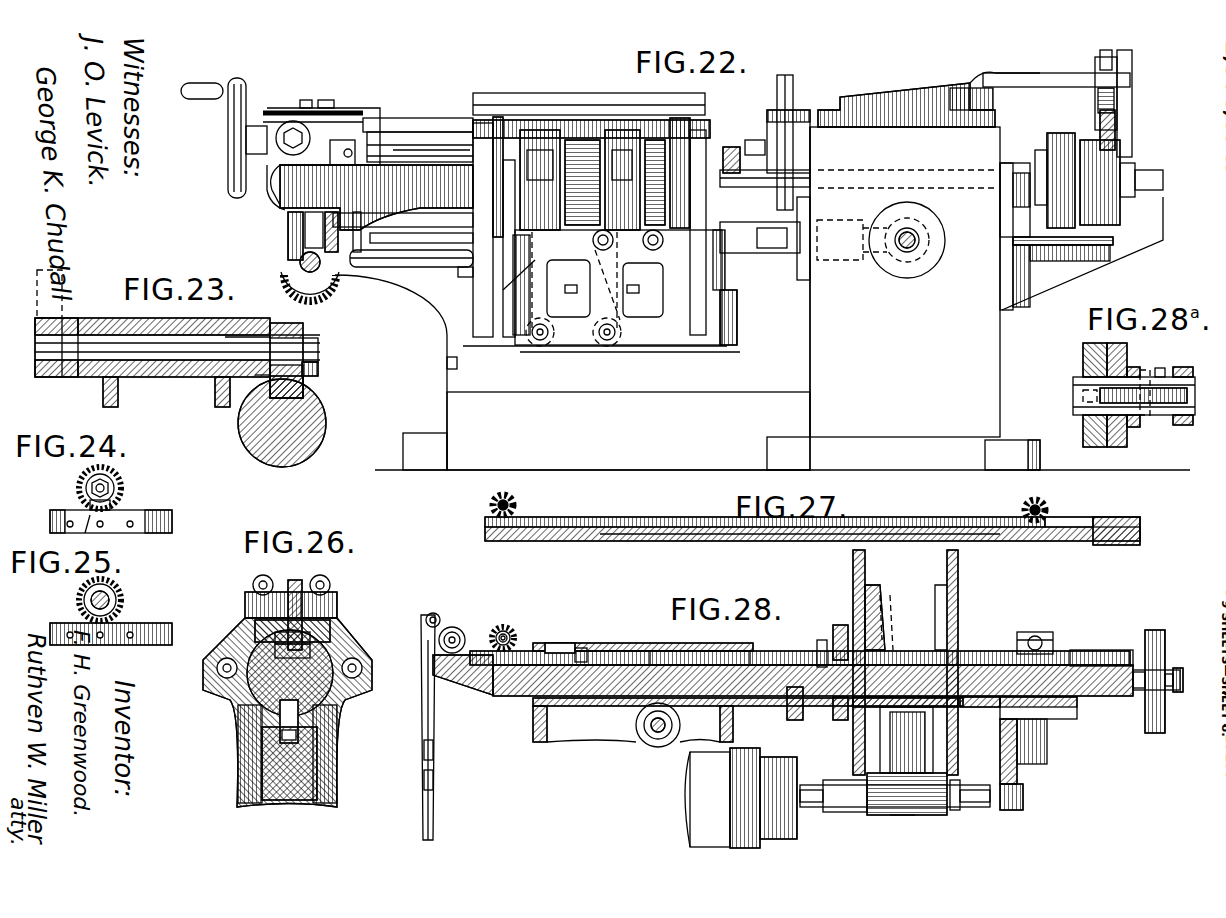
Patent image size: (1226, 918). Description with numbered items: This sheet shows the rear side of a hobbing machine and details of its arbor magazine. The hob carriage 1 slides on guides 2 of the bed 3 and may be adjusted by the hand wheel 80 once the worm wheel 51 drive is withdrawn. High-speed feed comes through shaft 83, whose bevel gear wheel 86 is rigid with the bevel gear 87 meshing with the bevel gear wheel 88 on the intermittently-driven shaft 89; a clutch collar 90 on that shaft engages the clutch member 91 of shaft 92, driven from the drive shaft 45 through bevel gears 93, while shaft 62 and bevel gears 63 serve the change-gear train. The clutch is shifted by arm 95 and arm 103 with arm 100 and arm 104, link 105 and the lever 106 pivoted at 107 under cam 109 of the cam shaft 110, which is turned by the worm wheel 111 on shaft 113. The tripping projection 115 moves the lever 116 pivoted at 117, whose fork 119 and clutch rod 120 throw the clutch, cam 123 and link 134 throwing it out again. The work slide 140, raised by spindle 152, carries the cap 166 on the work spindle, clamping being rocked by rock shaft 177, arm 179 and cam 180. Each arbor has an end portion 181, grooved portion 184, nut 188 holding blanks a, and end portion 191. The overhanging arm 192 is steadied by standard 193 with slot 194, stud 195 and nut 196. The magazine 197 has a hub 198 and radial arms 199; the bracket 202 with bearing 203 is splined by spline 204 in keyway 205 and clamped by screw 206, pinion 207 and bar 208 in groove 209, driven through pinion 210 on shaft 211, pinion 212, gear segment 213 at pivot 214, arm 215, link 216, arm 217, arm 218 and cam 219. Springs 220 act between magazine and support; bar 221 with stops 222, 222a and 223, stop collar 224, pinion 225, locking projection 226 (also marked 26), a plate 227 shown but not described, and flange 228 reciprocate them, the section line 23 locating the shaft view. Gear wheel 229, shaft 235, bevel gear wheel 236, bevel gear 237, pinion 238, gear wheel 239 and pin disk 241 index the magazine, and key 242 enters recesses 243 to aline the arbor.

In FIG. 22, the hob carriage 1 is at (485, 95).
In FIG. 22, the guides 2 is at (440, 130).
In FIG. 22, the bed 3 is at (447, 353).
In FIG. 28, the section line 23 is at (505, 625).
In FIG. 28, the locking projection 26 is at (1035, 628).
In FIG. 22, the drive shaft 45 is at (910, 255).
In FIG. 22, the worm wheel 51 is at (326, 100).
In FIG. 22, the shaft 62 is at (425, 292).
In FIG. 22, the bevel gears 63 is at (322, 277).
In FIG. 22, the hand wheel 80 is at (228, 137).
In FIG. 22, the shaft 83 is at (289, 121).
In FIG. 22, the bevel gear wheel 86 is at (285, 175).
In FIG. 22, the bevel gear 87 is at (330, 195).
In FIG. 22, the bevel gear wheel 88 is at (292, 278).
In FIG. 22, the intermittently-driven shaft 89 is at (378, 270).
In FIG. 22, the clutch collar 90 is at (756, 224).
In FIG. 22, the clutch member 91 is at (772, 228).
In FIG. 22, the shaft 92 is at (838, 262).
In FIG. 22, the bevel gears 93 is at (893, 262).
In FIG. 22, the arm 95 is at (306, 100).
In FIG. 22, the arm 100 is at (300, 185).
In FIG. 22, the arm 103 is at (352, 148).
In FIG. 22, the arm 104 is at (395, 120).
In FIG. 22, the link 105 is at (455, 122).
In FIG. 22, the lever 106 is at (507, 287).
In FIG. 22, the pivot 107 is at (540, 342).
In FIG. 22, the cam 109 is at (545, 130).
In FIG. 22, the cam shaft 110 is at (858, 172).
In FIG. 22, the worm wheel 111 is at (638, 130).
In FIG. 22, the shaft 113 is at (660, 248).
In FIG. 22, the tripping projection 115 is at (500, 130).
In FIG. 22, the lever 116 is at (592, 240).
In FIG. 22, the pivot 117 is at (612, 342).
In FIG. 22, the fork 119 is at (630, 303).
In FIG. 22, the clutch rod 120 is at (462, 276).
In FIG. 22, the cam 123 is at (590, 140).
In FIG. 22, the link 134 is at (445, 148).
In FIG. 28a, the slide 140 is at (1183, 426).
In FIG. 28, the slide 140 is at (580, 740).
In FIG. 28, the spindle 152 is at (657, 747).
In FIG. 28, the cap 166 is at (797, 768).
In FIG. 22, the rock shaft 177 is at (1095, 72).
In FIG. 22, the arm 179 is at (1117, 118).
In FIG. 22, the cam 180 is at (1115, 250).
In FIG. 28, the end portion 181 is at (818, 808).
In FIG. 28, the grooved portion 184 is at (866, 812).
In FIG. 28, the nut 188 is at (962, 793).
In FIG. 28, the end portion 191 is at (982, 808).
In FIG. 23, the overhanging arm 192 is at (320, 415).
In FIG. 26, the overhanging arm 192 is at (258, 695).
In FIG. 27, the overhanging arm 192 is at (1140, 534).
In FIG. 28a, the overhanging arm 192 is at (1073, 395).
In FIG. 28, the overhanging arm 192 is at (1105, 700).
In FIG. 28, the standard 193 is at (1148, 645).
In FIG. 28, the vertical slot 194 is at (1156, 630).
In FIG. 28, the stud 195 is at (1172, 672).
In FIG. 28, the nut 196 is at (1178, 695).
In FIG. 28a, the magazine 197 is at (1092, 447).
In FIG. 28, the magazine 197 is at (897, 600).
In FIG. 28, the hub 198 is at (905, 640).
In FIG. 28, the radial arms 199 is at (853, 588).
In FIG. 26, the bracket 202 is at (245, 748).
In FIG. 28, the bracket 202 is at (1030, 735).
In FIG. 28, the bearing 203 is at (1023, 795).
In FIG. 26, the spline 204 is at (300, 708).
In FIG. 28, the spline 204 is at (1060, 720).
In FIG. 26, the keyway 205 is at (300, 737).
In FIG. 28, the keyway 205 is at (985, 710).
In FIG. 26, the screw 206 is at (340, 600).
In FIG. 27, the screw 206 is at (1025, 505).
In FIG. 28, the screw 206 is at (1028, 632).
In FIG. 26, the pinion 207 is at (298, 580).
In FIG. 27, the pinion 207 is at (1048, 506).
In FIG. 23, the bar 208 is at (265, 385).
In FIG. 26, the bar 208 is at (332, 632).
In FIG. 27, the bar 208 is at (940, 505).
In FIG. 26, the longitudinal groove 209 is at (340, 646).
In FIG. 27, the longitudinal groove 209 is at (1080, 520).
In FIG. 28, the longitudinal groove 209 is at (668, 643).
In FIG. 23, the pinion 210 is at (278, 322).
In FIG. 27, the pinion 210 is at (518, 503).
In FIG. 23, the shaft 211 is at (170, 352).
In FIG. 24, the shaft 211 is at (122, 490).
In FIG. 25, the shaft 211 is at (110, 600).
In FIG. 27, the shaft 211 is at (490, 506).
In FIG. 28, the shaft 211 is at (515, 636).
In FIG. 23, the pinion 212 is at (50, 320).
In FIG. 23, the gear segment 213 is at (64, 276).
In FIG. 28, the gear segment 213 is at (462, 680).
In FIG. 28, the pivot 214 is at (455, 627).
In FIG. 28, the arm 215 is at (433, 612).
In FIG. 22, the link 216 is at (1132, 82).
In FIG. 28, the link 216 is at (434, 820).
In FIG. 22, the arm 217 is at (1130, 152).
In FIG. 22, the arm 218 is at (1068, 160).
In FIG. 22, the cam 219 is at (1068, 245).
In FIG. 26, the compression springs 220 is at (220, 673).
In FIG. 28, the compression springs 220 is at (985, 655).
In FIG. 23, the bar 221 is at (248, 440).
In FIG. 25, the bar 221 is at (172, 637).
In FIG. 26, the bar 221 is at (268, 648).
In FIG. 27, the bar 221 is at (765, 522).
In FIG. 28, the bar 221 is at (765, 656).
In FIG. 28, the stop 222 is at (1080, 650).
In FIG. 28, the stop 222a is at (1017, 642).
In FIG. 28a, the stop 223 is at (1160, 368).
In FIG. 28, the stop 223 is at (820, 640).
In FIG. 28a, the stop collar 224 is at (1140, 425).
In FIG. 28, the stop collar 224 is at (835, 718).
In FIG. 23, the pinion 225 is at (300, 325).
In FIG. 24, the pinion 225 is at (118, 478).
In FIG. 25, the pinion 225 is at (120, 590).
In FIG. 28, the pinion 225 is at (509, 626).
In FIG. 23, the locking projection 226 is at (305, 380).
In FIG. 24, the locking projection 226 is at (60, 512).
In FIG. 28, the locking projection 226 is at (582, 648).
In FIG. 24, the plate 227 is at (86, 533).
In FIG. 28, the plate 227 is at (565, 642).
In FIG. 23, the flange 228 is at (318, 365).
In FIG. 24, the flange 228 is at (115, 505).
In FIG. 28, the flange 228 is at (498, 630).
In FIG. 28a, the gear wheel 229 is at (1117, 447).
In FIG. 28, the gear wheel 229 is at (840, 625).
In FIG. 22, the shaft 235 is at (795, 88).
In FIG. 22, the bevel gear wheel 236 is at (822, 152).
In FIG. 22, the bevel gear 237 is at (762, 145).
In FIG. 22, the pinion 238 is at (740, 147).
In FIG. 22, the gear wheel 239 is at (740, 160).
In FIG. 22, the pin disk 241 is at (678, 135).
In FIG. 28a, the key 242 is at (1138, 422).
In FIG. 28, the key 242 is at (803, 712).
In FIG. 28a, the recesses 243 is at (1082, 378).
In FIG. 28, the recesses 243 is at (886, 595).
In FIG. 28, the spur gear blanks a is at (912, 818).